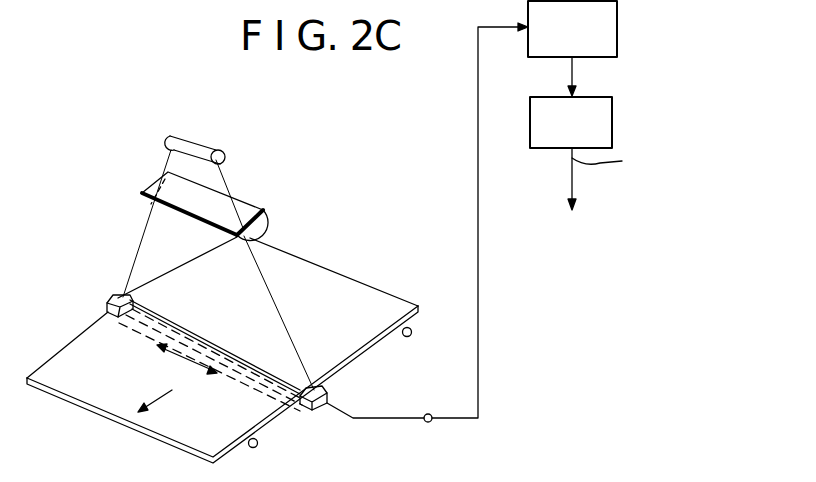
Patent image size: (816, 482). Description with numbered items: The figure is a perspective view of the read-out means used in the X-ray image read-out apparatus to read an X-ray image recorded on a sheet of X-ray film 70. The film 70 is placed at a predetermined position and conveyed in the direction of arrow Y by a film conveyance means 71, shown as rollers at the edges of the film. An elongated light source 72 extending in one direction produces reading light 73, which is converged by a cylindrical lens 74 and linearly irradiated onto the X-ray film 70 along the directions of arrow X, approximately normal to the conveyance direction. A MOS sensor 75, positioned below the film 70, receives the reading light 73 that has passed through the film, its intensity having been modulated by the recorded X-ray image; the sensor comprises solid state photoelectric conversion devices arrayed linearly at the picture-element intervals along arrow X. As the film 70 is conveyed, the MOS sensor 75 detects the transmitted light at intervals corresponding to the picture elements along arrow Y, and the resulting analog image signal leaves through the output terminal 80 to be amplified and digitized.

The X-ray film 70 is at (395, 297).
The film conveyance means 71 is at (411, 334).
The elongated light source 72 is at (221, 150).
The reading light 73 is at (222, 182).
The cylindrical lens 74 is at (268, 208).
The MOS sensor 75 is at (327, 398).
The output terminal 80 is at (428, 422).